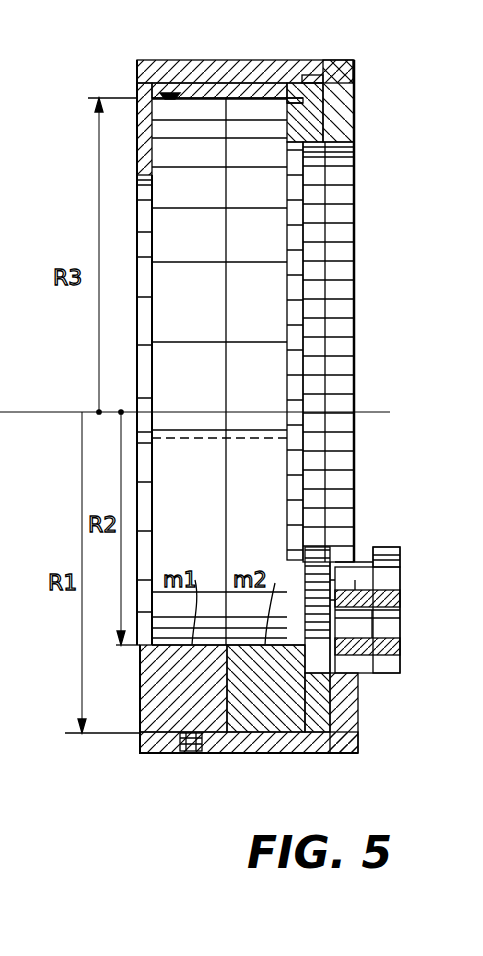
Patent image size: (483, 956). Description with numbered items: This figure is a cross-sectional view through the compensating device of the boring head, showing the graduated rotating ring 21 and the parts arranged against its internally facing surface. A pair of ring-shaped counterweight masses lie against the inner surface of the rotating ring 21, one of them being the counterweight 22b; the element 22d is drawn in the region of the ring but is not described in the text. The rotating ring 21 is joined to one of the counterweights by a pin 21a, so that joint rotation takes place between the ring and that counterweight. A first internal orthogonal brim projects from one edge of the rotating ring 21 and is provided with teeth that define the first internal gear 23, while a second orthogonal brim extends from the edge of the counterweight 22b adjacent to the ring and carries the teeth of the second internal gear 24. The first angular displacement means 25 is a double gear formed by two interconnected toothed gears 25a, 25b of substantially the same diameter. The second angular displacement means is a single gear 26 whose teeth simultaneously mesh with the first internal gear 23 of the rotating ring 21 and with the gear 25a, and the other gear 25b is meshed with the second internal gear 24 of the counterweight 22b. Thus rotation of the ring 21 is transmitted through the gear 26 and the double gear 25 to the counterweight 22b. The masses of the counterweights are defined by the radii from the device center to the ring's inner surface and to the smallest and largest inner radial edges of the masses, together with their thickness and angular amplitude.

The graduated rotating ring 21 is at (340, 95).
The pin 21a is at (197, 753).
The counterweight mass 22b is at (292, 68).
The groove 22d is at (165, 93).
The first internal gear 23 is at (355, 180).
The second internal gear 24 is at (303, 187).
The first angular displacement means 25 is at (407, 560).
The toothed gear 25a is at (383, 547).
The toothed gear 25b is at (310, 547).
The single gear 26 is at (390, 657).